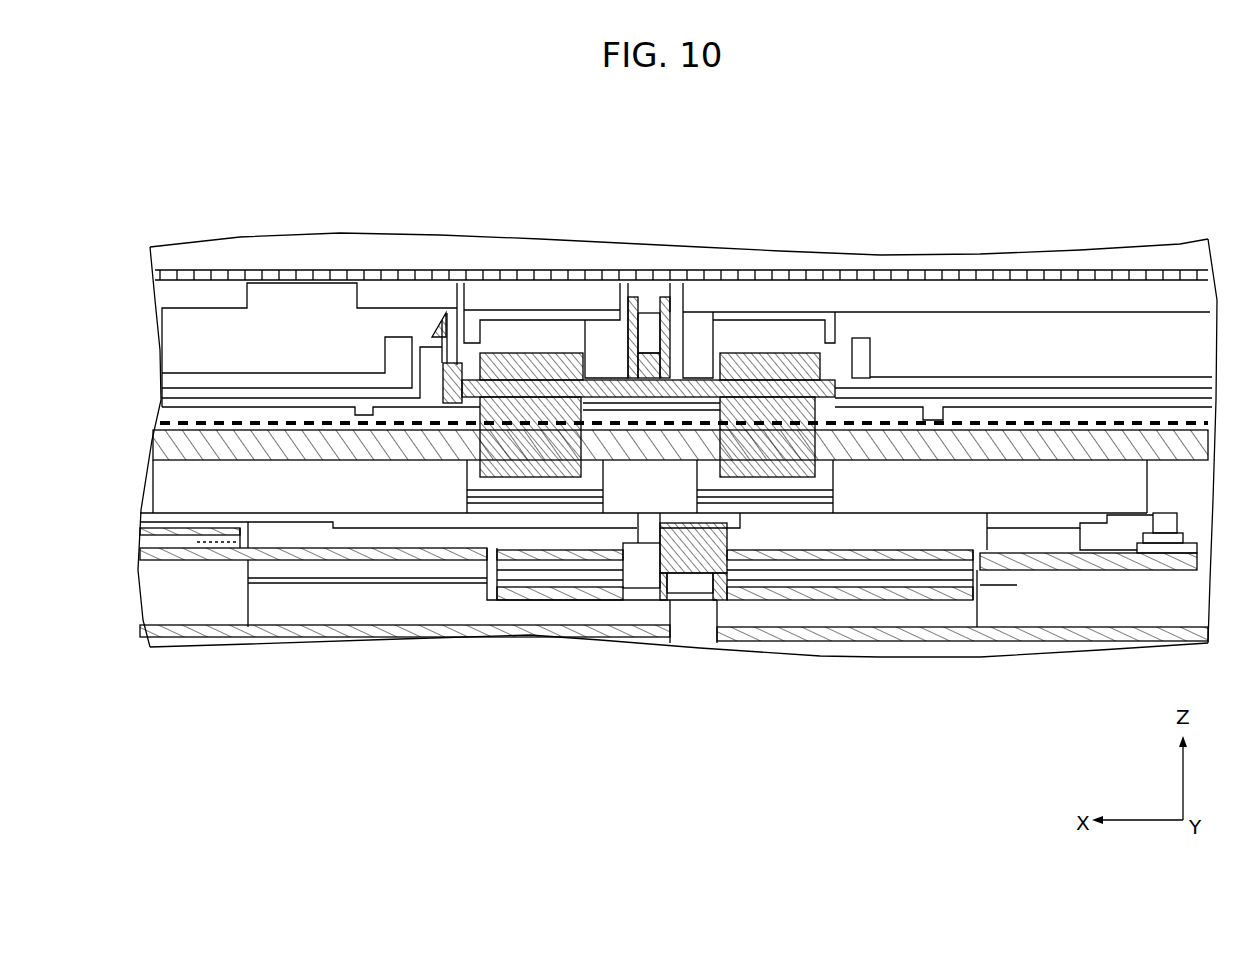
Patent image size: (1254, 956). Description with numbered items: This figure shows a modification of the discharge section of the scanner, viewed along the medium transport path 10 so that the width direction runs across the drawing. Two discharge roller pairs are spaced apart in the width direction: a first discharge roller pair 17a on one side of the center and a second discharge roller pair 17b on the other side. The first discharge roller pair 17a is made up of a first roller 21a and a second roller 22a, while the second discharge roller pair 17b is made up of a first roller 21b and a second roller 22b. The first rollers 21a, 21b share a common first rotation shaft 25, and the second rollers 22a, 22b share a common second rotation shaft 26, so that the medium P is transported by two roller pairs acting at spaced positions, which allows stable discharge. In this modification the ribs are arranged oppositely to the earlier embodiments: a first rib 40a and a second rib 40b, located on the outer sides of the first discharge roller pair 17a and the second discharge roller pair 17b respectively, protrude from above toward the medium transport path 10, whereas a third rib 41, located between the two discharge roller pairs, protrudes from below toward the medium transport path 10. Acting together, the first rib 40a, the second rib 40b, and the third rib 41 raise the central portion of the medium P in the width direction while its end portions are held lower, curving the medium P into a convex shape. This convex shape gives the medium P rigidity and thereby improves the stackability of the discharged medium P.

The medium transport path 10 is at (163, 405).
The medium P is at (265, 400).
The first rib 40a is at (368, 412).
The second rib 40b is at (931, 420).
The first discharge roller pair 17a is at (565, 176).
The second discharge roller pair 17b is at (817, 164).
The first roller 21a is at (508, 420).
The second roller 22a is at (542, 353).
The first roller 21b is at (734, 425).
The second roller 22b is at (783, 353).
The second rotation shaft 26 is at (603, 372).
The first rotation shaft 25 is at (689, 425).
The third rib 41 is at (652, 430).